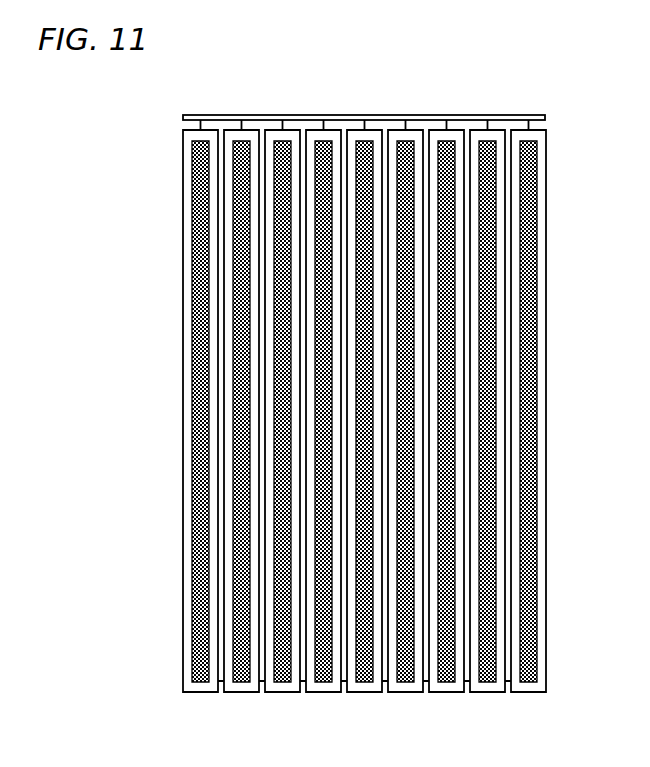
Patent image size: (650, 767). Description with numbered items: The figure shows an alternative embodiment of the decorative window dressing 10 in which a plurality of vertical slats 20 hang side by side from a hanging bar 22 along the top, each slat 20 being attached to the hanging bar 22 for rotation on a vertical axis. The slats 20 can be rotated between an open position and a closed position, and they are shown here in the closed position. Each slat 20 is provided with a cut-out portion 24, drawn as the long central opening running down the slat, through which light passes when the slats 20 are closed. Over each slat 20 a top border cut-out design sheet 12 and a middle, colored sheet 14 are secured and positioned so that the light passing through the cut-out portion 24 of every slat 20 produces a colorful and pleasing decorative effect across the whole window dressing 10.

The decorative window dressing 10 is at (134, 94).
The top border cut-out design sheet 12 is at (537, 386).
The middle, colored sheet 14 is at (529, 344).
The vertical slat 20 is at (192, 684).
The hanging bar 22 is at (473, 107).
The cut-out portion 24 is at (184, 263).